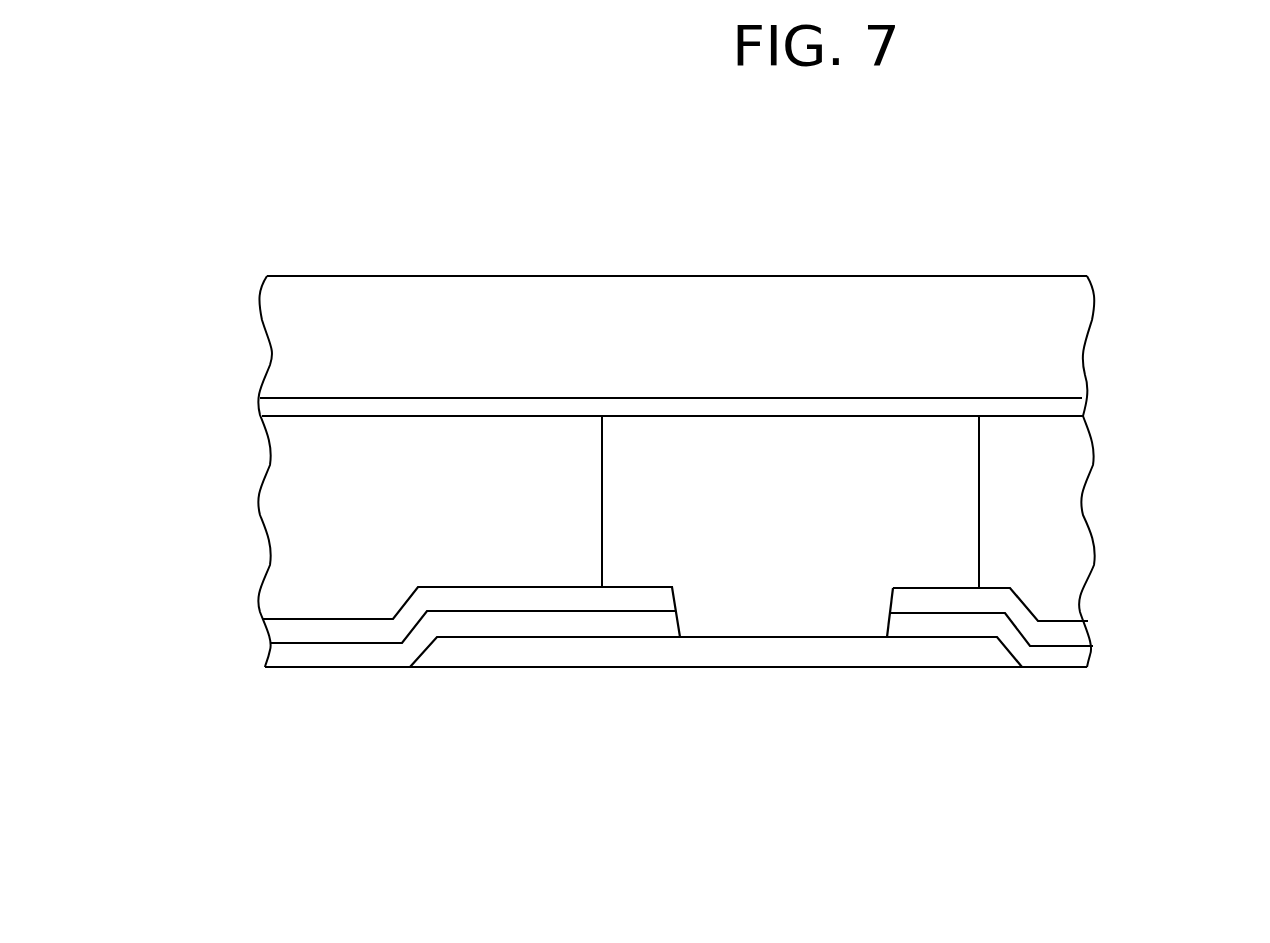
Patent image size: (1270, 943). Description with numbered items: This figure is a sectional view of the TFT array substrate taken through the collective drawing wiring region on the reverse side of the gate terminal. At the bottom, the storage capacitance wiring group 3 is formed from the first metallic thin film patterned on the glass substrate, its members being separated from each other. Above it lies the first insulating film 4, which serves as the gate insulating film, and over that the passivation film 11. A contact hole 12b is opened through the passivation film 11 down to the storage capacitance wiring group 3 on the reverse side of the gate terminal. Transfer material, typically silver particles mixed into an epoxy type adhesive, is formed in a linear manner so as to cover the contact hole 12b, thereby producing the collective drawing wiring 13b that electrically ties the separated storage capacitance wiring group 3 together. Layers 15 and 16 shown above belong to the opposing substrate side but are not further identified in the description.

The counter substrate 16 is at (948, 298).
The counter electrode layer 15 is at (1025, 409).
The contact hole on storage capacitance wiring group on the reverse side of the gate 12b is at (813, 590).
The collective drawing wiring on the reverse side of the gate terminal 13b is at (958, 541).
The passivation film 11 is at (352, 632).
The first insulating film 4 is at (553, 627).
The storage capacitance wiring group 3 is at (758, 658).